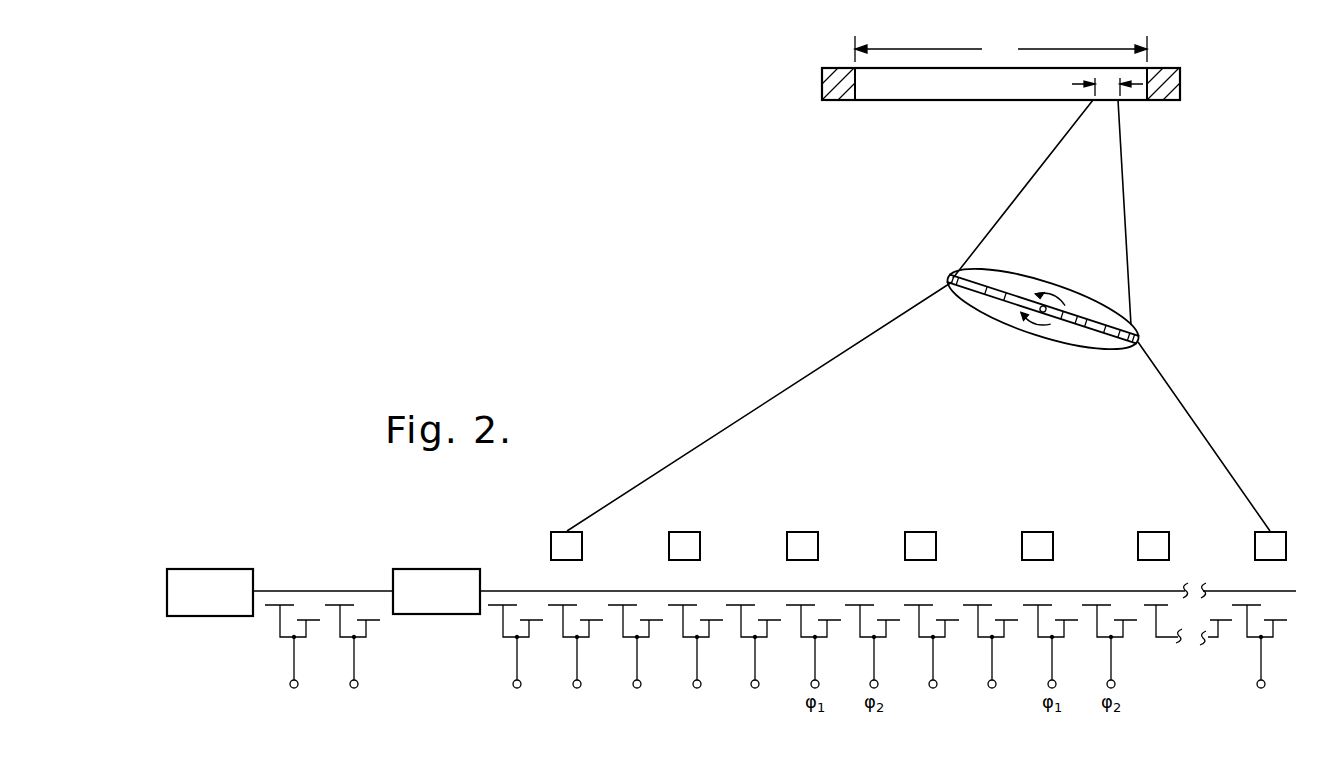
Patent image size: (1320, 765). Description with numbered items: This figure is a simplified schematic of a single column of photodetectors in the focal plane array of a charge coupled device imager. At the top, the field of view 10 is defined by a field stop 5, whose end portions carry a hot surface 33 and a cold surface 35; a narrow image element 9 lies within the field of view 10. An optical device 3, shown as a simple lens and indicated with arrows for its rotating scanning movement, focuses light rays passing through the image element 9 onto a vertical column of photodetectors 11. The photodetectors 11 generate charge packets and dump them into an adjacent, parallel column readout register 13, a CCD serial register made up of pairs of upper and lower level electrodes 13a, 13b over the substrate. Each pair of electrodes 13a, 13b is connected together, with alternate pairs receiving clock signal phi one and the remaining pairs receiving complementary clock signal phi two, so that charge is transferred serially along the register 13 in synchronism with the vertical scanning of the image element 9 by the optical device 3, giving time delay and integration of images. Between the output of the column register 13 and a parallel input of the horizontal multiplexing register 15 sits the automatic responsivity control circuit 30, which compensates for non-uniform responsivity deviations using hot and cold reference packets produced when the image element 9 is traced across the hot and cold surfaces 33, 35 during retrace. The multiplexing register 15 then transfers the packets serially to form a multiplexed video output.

The optical device 3 is at (1082, 294).
The field stop 5 is at (870, 100).
The image element 9 is at (1107, 89).
The field of view 10 is at (1001, 49).
The photodetectors 11 is at (702, 531).
The column readout register 13 is at (776, 662).
The upper level electrodes 13a is at (976, 604).
The lower level electrodes 13b is at (1014, 628).
The horizontal multiplexing register 15 is at (253, 569).
The automatic responsivity control circuit 30 is at (491, 557).
The hot surface 33 is at (1172, 68).
The cold surface 35 is at (822, 68).